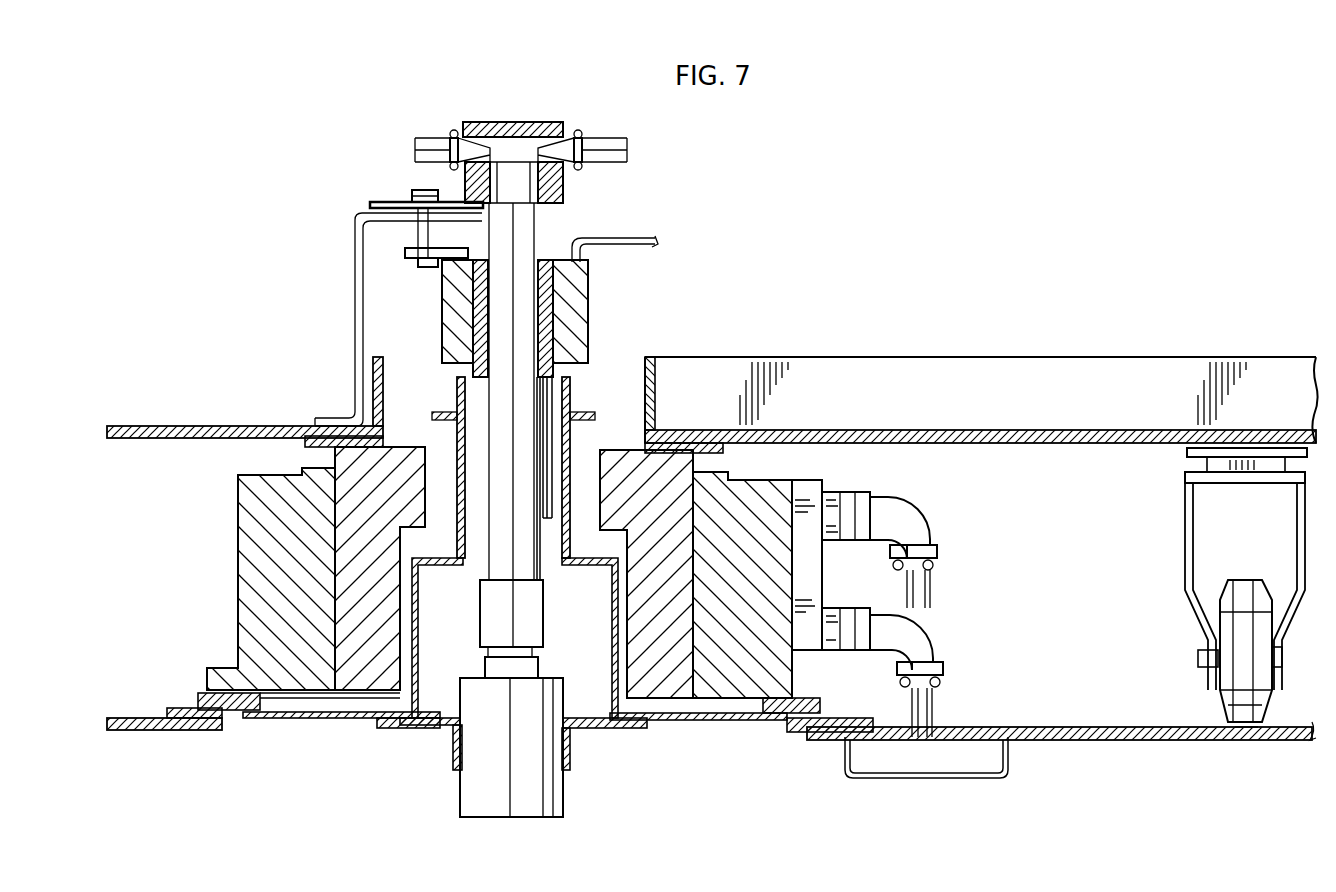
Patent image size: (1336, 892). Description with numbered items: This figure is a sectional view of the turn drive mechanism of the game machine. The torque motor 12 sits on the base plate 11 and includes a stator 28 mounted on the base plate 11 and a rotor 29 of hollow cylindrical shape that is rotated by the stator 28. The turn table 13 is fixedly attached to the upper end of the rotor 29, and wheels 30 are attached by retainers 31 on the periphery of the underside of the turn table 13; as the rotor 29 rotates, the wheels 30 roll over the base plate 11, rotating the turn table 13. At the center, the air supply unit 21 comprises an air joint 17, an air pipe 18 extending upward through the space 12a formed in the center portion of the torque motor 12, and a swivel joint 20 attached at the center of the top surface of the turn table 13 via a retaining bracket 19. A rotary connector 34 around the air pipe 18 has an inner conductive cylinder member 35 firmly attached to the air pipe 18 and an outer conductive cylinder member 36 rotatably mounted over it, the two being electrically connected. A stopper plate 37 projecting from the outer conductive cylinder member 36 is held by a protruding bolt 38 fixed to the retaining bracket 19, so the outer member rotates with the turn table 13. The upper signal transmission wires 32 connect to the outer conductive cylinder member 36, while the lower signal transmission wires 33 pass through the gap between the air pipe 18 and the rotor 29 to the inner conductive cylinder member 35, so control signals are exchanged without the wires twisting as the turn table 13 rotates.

The base plate 11 is at (1045, 742).
The torque motor 12 is at (543, 586).
The space 12a is at (586, 690).
The turn table 13 is at (220, 424).
The air joint 17 is at (520, 122).
The air pipe 18 is at (498, 540).
The retaining bracket 19 is at (352, 278).
The swivel joint 20 is at (580, 185).
The air supply unit 21 is at (445, 800).
The stator 28 is at (238, 608).
The rotor 29 is at (370, 690).
The wheels 30 is at (1222, 695).
The retainers 31 is at (1185, 542).
The upper signal transmission wires 32 is at (598, 240).
The lower signal transmission wires 33 is at (552, 405).
The rotary connector 34 is at (438, 356).
The inner conductive cylinder member 35 is at (555, 335).
The outer conductive cylinder member 36 is at (588, 292).
The stopper plate 37 is at (416, 262).
The protruding bolt 38 is at (420, 200).